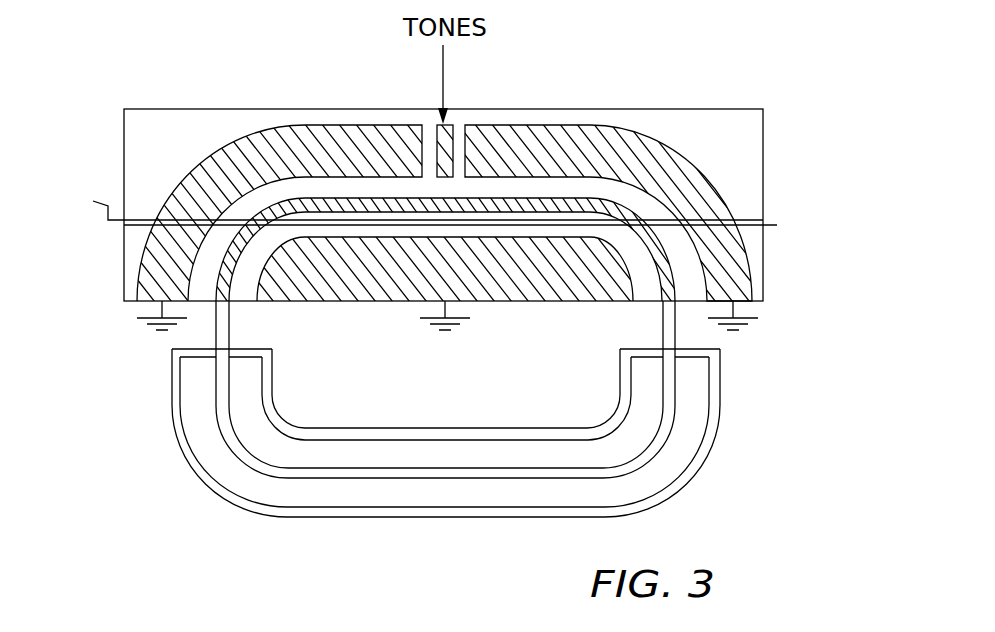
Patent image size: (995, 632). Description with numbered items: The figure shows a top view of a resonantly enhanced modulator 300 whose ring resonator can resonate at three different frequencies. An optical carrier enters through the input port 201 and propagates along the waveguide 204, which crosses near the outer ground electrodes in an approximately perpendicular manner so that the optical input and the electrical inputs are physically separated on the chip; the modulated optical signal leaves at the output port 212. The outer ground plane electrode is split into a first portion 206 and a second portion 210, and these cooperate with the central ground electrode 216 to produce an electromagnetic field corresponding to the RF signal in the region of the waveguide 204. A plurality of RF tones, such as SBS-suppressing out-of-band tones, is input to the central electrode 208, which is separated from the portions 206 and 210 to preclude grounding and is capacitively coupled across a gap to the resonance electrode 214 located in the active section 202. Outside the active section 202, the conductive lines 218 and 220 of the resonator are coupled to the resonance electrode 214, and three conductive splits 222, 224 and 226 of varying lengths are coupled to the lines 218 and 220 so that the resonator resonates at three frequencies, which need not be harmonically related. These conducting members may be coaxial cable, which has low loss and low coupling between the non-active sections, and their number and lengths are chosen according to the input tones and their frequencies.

The input port 201 is at (401, 203).
The active section 202 is at (803, 306).
The waveguide 204 is at (138, 217).
The first portion of outer ground plane electrode 206 is at (273, 125).
The central electrode 208 is at (434, 132).
The second portion of outer ground plane electrode 210 is at (571, 125).
The output port 212 is at (777, 225).
The resonance electrode 214 is at (195, 302).
The central ground electrode 216 is at (331, 302).
The conductive line 218 is at (230, 328).
The conductive line 220 is at (663, 328).
The conductive line (split) 222 is at (533, 428).
The conductive line (split) 224 is at (460, 478).
The conductive line (split) 226 is at (521, 517).
The resonantly enhanced modulator 300 is at (104, 301).